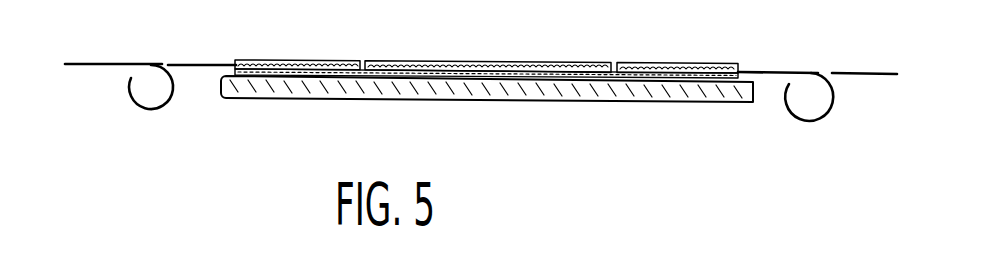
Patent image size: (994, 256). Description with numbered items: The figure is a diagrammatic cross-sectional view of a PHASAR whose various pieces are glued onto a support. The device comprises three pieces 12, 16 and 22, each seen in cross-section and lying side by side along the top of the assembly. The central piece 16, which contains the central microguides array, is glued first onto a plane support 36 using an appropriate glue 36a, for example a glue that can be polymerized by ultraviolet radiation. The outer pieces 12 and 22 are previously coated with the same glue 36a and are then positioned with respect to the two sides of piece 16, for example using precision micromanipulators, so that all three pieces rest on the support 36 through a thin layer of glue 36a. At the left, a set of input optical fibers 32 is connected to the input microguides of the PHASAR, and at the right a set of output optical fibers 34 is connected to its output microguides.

The piece 12 is at (312, 60).
The piece 16 is at (530, 64).
The piece 22 is at (668, 64).
The input optical fibers 32 is at (92, 67).
The output optical fibers 34 is at (778, 73).
The plane support 36 is at (460, 88).
The glue 36a is at (288, 75).